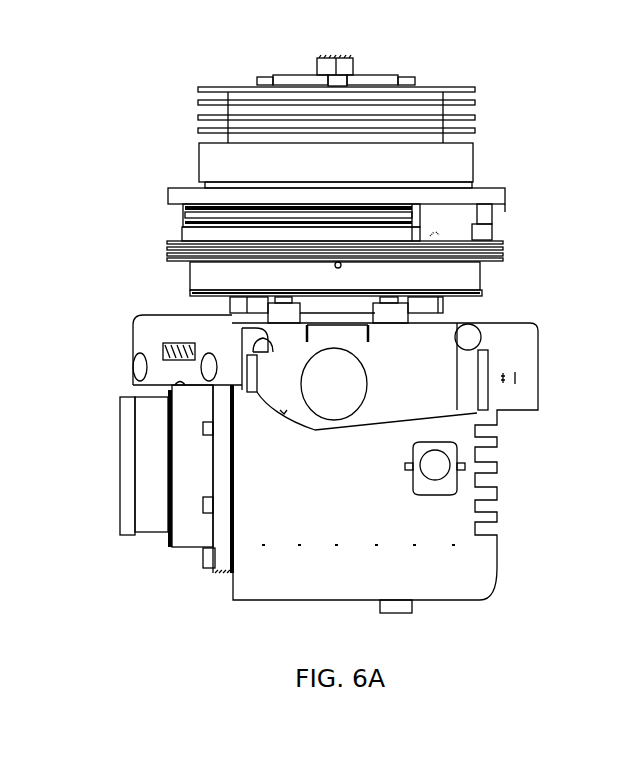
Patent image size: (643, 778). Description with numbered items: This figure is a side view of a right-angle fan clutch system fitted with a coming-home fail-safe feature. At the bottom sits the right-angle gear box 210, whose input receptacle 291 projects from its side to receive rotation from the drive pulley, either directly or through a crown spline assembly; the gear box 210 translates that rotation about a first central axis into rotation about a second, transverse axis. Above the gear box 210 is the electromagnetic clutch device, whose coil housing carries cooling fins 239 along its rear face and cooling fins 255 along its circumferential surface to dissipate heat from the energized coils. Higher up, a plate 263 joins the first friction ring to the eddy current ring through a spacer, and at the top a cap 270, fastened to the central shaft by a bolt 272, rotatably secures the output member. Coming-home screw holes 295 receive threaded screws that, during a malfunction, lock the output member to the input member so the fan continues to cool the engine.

The right-angle gear box 210 is at (485, 583).
The cooling fins 239 is at (190, 293).
The cooling fins 255 is at (170, 248).
The plate 263 is at (233, 92).
The cap 270 is at (408, 77).
The bolt 272 is at (347, 66).
The input receptacle 291 is at (120, 532).
The coming-home screw holes 295 is at (437, 234).